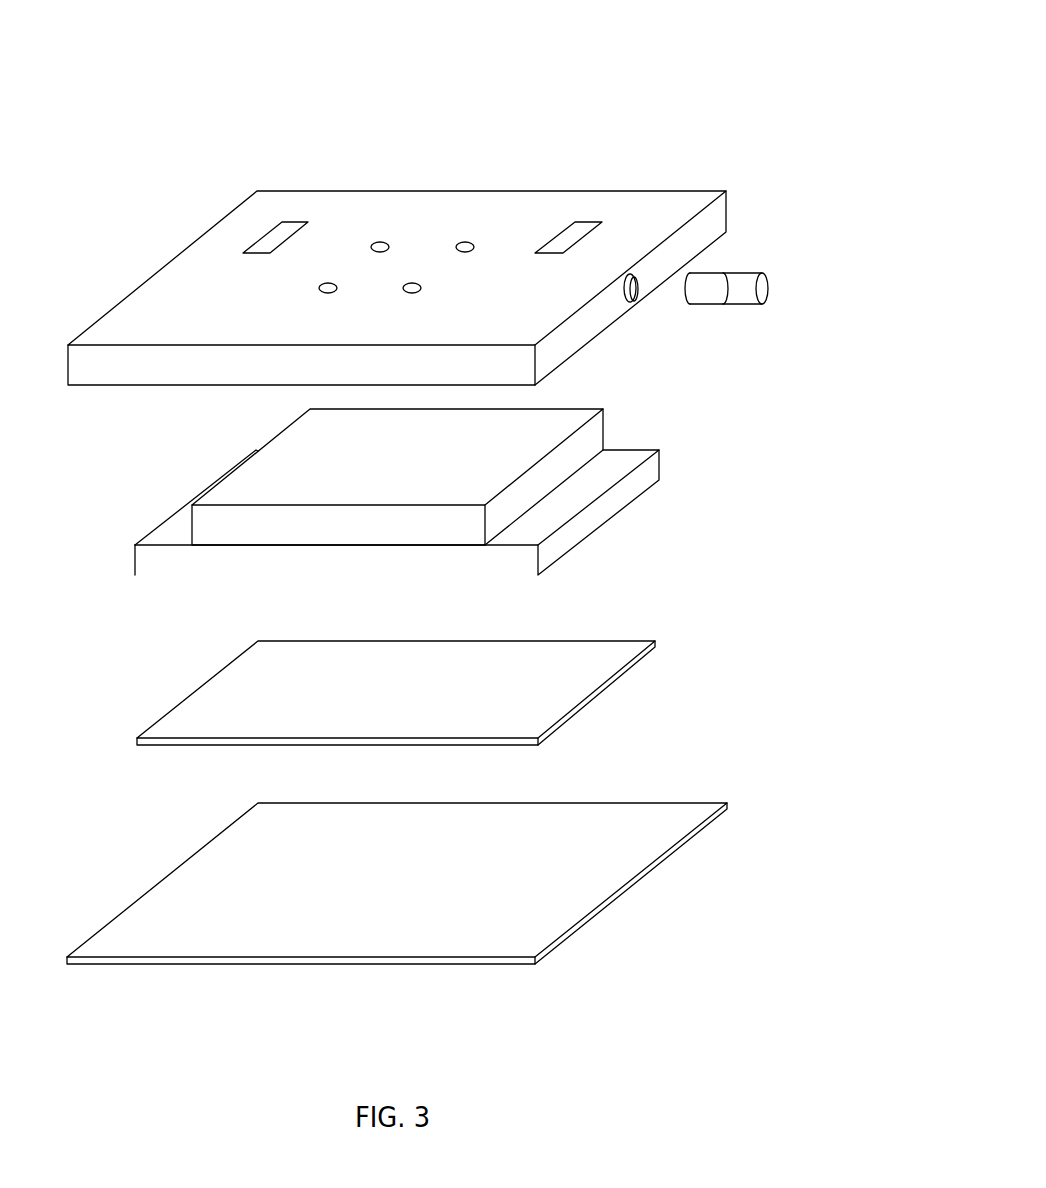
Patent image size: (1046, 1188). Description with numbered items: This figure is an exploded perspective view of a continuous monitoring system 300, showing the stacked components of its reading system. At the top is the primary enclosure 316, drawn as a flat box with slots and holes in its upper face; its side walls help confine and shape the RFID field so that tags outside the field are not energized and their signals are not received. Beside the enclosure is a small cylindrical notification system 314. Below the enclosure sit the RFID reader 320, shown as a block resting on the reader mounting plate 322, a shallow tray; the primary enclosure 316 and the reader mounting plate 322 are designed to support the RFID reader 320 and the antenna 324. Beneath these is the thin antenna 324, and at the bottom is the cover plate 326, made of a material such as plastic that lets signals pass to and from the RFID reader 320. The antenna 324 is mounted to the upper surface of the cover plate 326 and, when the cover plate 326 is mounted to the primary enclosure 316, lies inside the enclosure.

The sensor assembly 300 is at (475, 133).
The notification system 314 is at (768, 285).
The primary enclosure 316 is at (727, 202).
The RFID reader 320 is at (603, 433).
The reader mounting plate 322 is at (659, 457).
The antenna 324 is at (632, 640).
The cover plate 326 is at (690, 802).